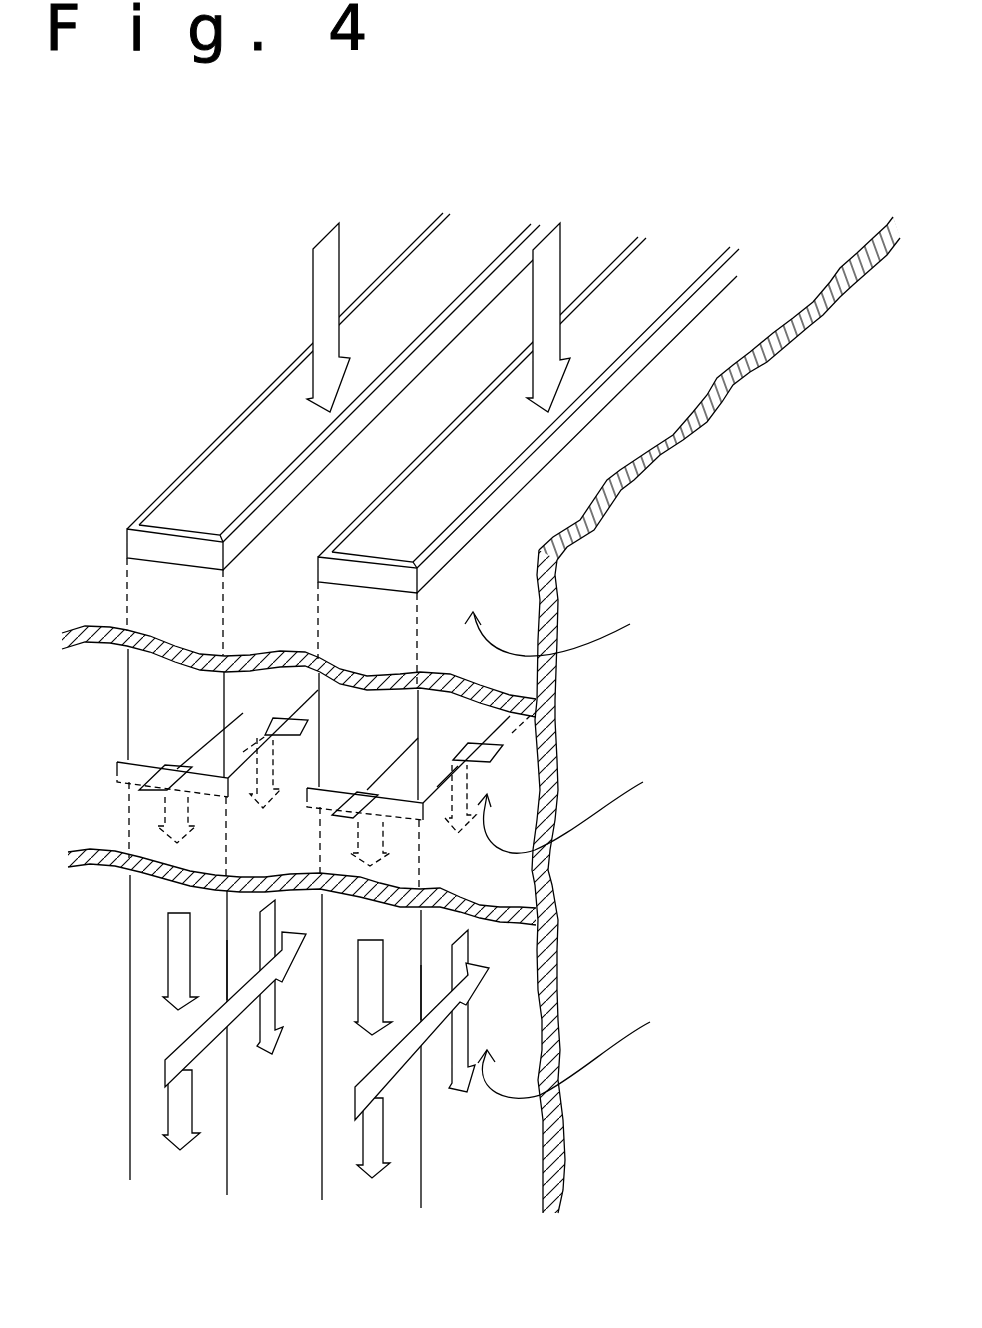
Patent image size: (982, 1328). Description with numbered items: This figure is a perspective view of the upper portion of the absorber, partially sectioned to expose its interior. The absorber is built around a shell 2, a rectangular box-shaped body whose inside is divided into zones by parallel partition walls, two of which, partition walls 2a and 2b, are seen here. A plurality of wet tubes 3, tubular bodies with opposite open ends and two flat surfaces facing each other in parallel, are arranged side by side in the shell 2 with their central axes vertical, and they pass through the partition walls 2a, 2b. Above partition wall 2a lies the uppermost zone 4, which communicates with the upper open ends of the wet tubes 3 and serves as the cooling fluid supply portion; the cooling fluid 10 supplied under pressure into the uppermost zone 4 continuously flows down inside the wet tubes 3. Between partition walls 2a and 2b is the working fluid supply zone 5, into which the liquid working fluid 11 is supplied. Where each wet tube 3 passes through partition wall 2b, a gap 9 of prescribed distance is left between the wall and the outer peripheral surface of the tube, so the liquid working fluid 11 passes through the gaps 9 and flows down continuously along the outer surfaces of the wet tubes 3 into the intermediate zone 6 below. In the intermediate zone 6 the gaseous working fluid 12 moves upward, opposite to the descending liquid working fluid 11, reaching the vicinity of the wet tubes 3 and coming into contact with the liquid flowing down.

The shell 2 is at (662, 702).
The partition wall 2a is at (282, 613).
The partition wall 2b is at (302, 871).
The wet tube 3 is at (182, 719).
The uppermost zone 4 is at (557, 631).
The working fluid supply zone 5 is at (569, 809).
The intermediate zone 6 is at (575, 1052).
The gap 9 is at (120, 743).
The cooling fluid 10 is at (314, 305).
The liquid working fluid 11 is at (292, 728).
The gaseous working fluid 12 is at (185, 1038).